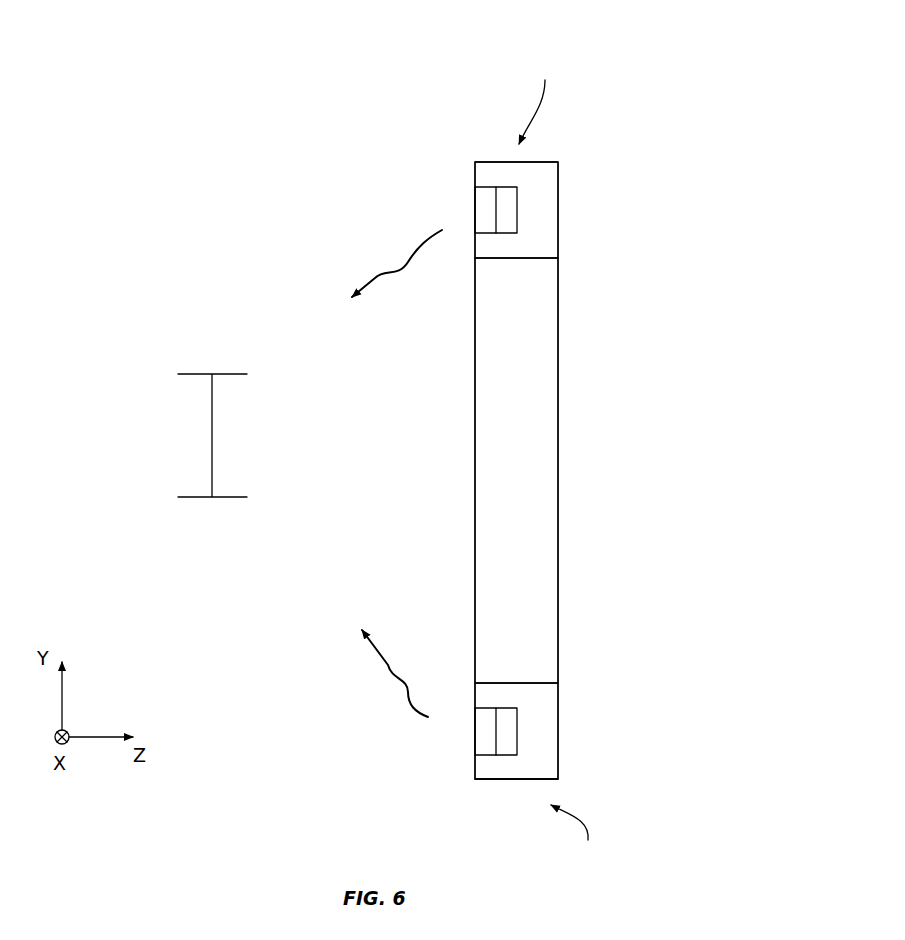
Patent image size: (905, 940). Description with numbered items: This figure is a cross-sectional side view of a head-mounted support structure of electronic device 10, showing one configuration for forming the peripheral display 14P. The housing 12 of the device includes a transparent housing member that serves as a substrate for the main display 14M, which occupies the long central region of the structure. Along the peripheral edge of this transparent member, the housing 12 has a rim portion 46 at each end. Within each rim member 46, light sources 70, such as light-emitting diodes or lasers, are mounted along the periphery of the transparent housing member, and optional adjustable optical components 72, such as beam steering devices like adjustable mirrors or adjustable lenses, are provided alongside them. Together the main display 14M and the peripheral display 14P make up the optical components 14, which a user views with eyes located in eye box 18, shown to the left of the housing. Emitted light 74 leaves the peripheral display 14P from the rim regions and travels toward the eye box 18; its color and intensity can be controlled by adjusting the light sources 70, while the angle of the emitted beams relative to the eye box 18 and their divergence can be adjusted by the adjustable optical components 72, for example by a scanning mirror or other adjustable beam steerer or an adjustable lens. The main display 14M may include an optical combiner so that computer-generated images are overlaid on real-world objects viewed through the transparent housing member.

The electronic device 10 is at (787, 88).
The housing 12 is at (539, 162).
The optical components 14 is at (521, 768).
The main display 14M is at (558, 473).
The peripheral display 14P is at (558, 208).
The eye box 18 is at (195, 372).
The rim portion 46 is at (560, 460).
The light sources 70 is at (517, 202).
The adjustable optical components 72 is at (475, 208).
The emitted light 74 is at (400, 272).